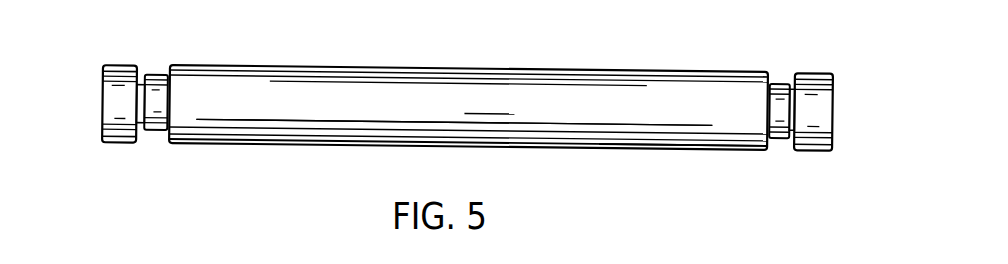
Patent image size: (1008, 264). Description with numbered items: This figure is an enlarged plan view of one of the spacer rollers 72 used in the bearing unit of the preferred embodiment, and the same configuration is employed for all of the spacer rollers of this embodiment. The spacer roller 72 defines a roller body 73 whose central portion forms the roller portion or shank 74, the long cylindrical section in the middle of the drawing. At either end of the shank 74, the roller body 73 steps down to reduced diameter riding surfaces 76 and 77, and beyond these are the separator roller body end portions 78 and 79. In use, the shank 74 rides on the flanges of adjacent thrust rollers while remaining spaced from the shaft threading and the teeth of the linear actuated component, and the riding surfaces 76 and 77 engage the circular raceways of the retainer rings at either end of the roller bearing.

The spacer roller 72 is at (712, 87).
The roller body 73 is at (737, 133).
The shank 74 is at (255, 128).
The riding surface 76 is at (157, 117).
The riding surface 77 is at (780, 90).
The separator roller body end portion 78 is at (112, 102).
The separator roller body end portion 79 is at (825, 110).